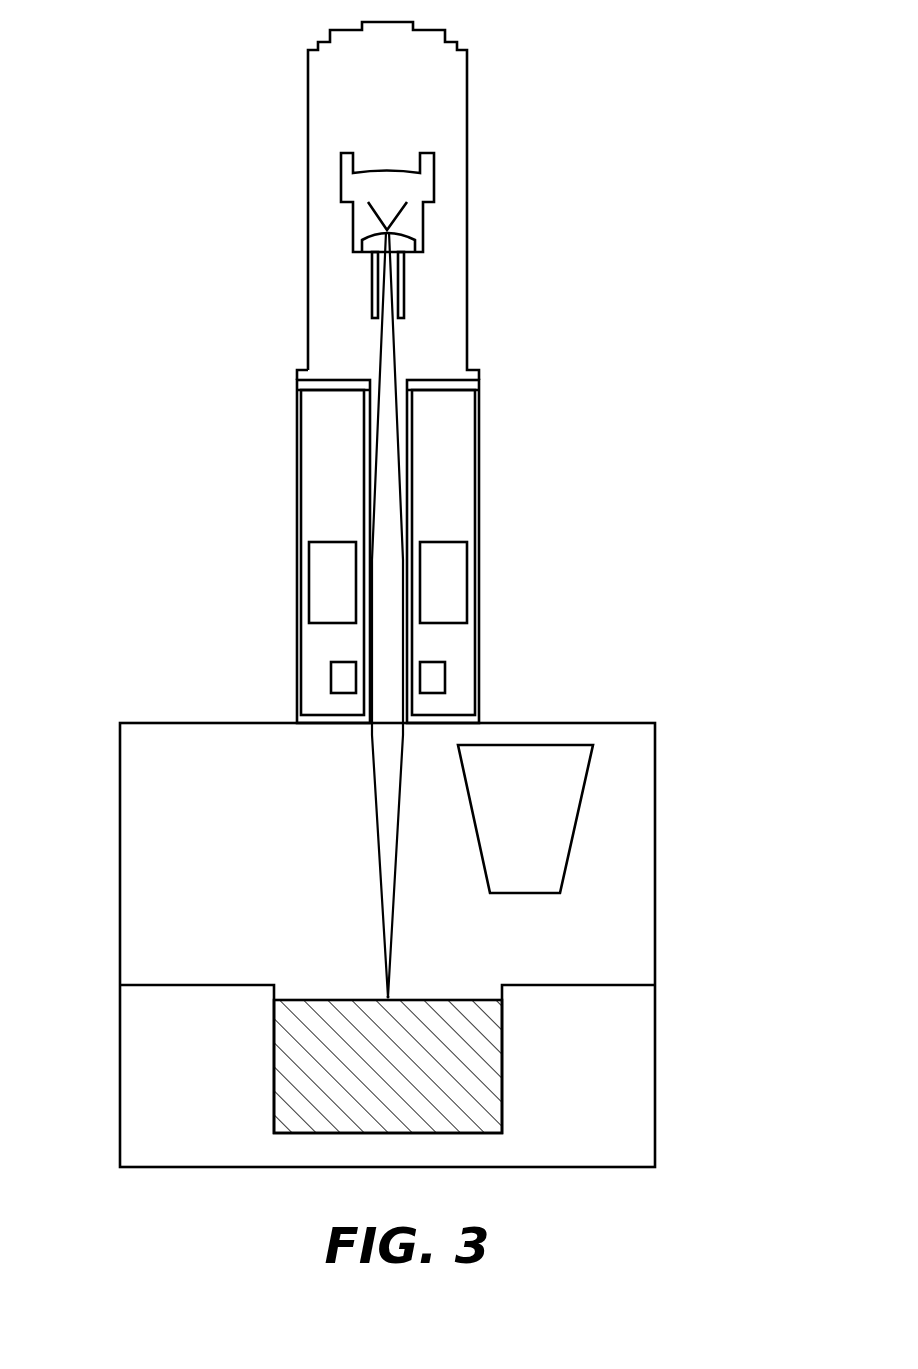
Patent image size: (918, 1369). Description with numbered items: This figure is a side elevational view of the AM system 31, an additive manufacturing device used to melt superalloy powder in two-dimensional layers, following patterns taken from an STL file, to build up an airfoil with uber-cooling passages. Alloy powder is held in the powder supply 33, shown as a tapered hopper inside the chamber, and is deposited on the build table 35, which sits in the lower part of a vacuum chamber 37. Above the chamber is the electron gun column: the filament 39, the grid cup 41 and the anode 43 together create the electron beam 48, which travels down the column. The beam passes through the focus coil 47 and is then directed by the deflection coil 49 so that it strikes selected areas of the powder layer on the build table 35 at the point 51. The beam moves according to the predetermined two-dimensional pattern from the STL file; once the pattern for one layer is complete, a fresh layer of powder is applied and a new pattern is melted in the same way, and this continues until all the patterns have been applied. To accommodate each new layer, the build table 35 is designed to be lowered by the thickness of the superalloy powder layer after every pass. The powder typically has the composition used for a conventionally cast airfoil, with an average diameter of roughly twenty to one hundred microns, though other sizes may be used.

The AM system 31 is at (521, 372).
The powder supply 33 is at (560, 795).
The build table 35 is at (480, 998).
The vacuum chamber 37 is at (180, 758).
The filament 39 is at (403, 209).
The grid cup 41 is at (403, 245).
The anode 43 is at (403, 300).
The focus coil 47 is at (440, 568).
The electron beam 48 is at (387, 447).
The deflection coil 49 is at (435, 675).
The strike point on powder layer 51 is at (387, 997).